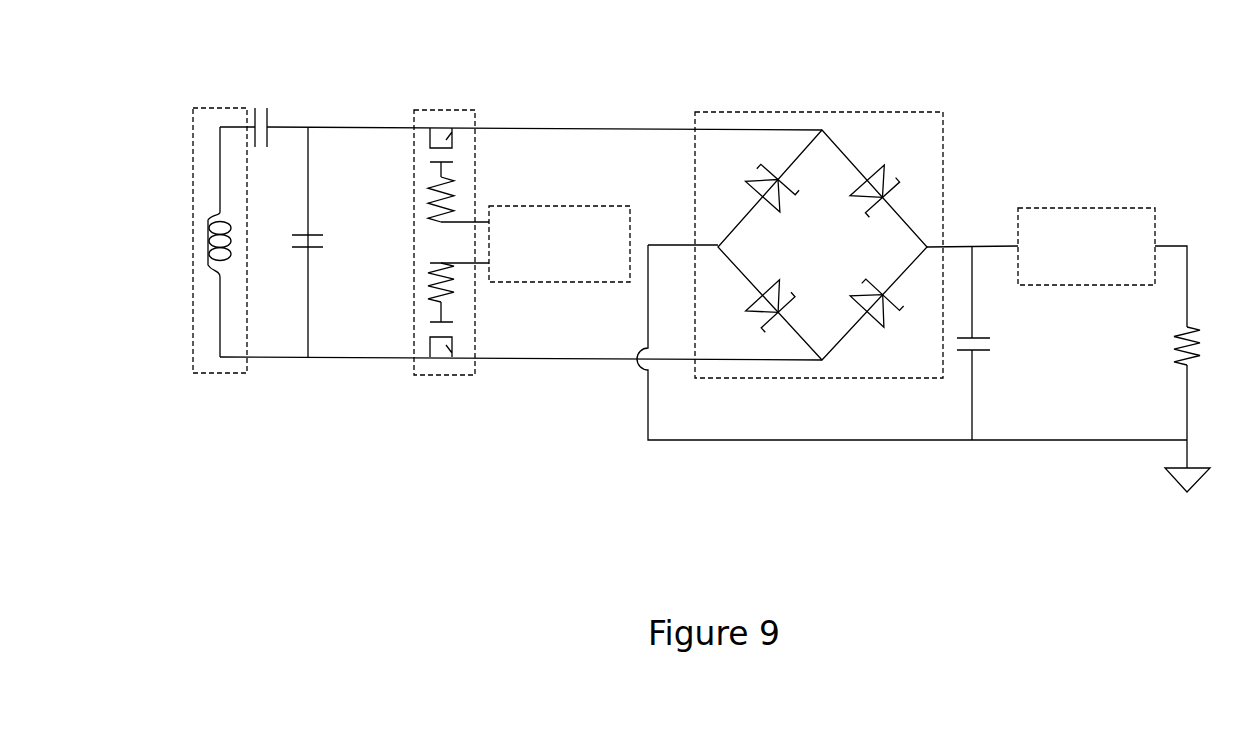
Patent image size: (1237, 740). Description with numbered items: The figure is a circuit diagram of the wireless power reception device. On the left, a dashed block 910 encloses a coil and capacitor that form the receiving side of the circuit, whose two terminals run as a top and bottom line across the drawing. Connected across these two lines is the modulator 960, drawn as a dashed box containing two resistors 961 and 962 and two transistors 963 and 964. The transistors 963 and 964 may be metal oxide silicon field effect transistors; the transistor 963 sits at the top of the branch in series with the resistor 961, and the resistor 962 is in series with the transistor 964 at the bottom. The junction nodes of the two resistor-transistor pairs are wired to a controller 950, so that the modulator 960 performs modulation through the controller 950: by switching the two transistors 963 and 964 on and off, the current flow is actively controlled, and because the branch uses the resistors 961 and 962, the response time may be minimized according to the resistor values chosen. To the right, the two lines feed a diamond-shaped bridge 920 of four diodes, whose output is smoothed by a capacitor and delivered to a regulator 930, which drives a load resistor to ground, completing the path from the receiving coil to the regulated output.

The power source / pickup coil 910 is at (233, 108).
The modulator 960 is at (455, 110).
The transistor 963 is at (427, 155).
The resistor 961 is at (427, 200).
The resistor 962 is at (427, 270).
The transistor 964 is at (427, 328).
The controller 950 is at (590, 206).
The rectifier bridge 920 is at (820, 112).
The regulator 930 is at (1133, 208).